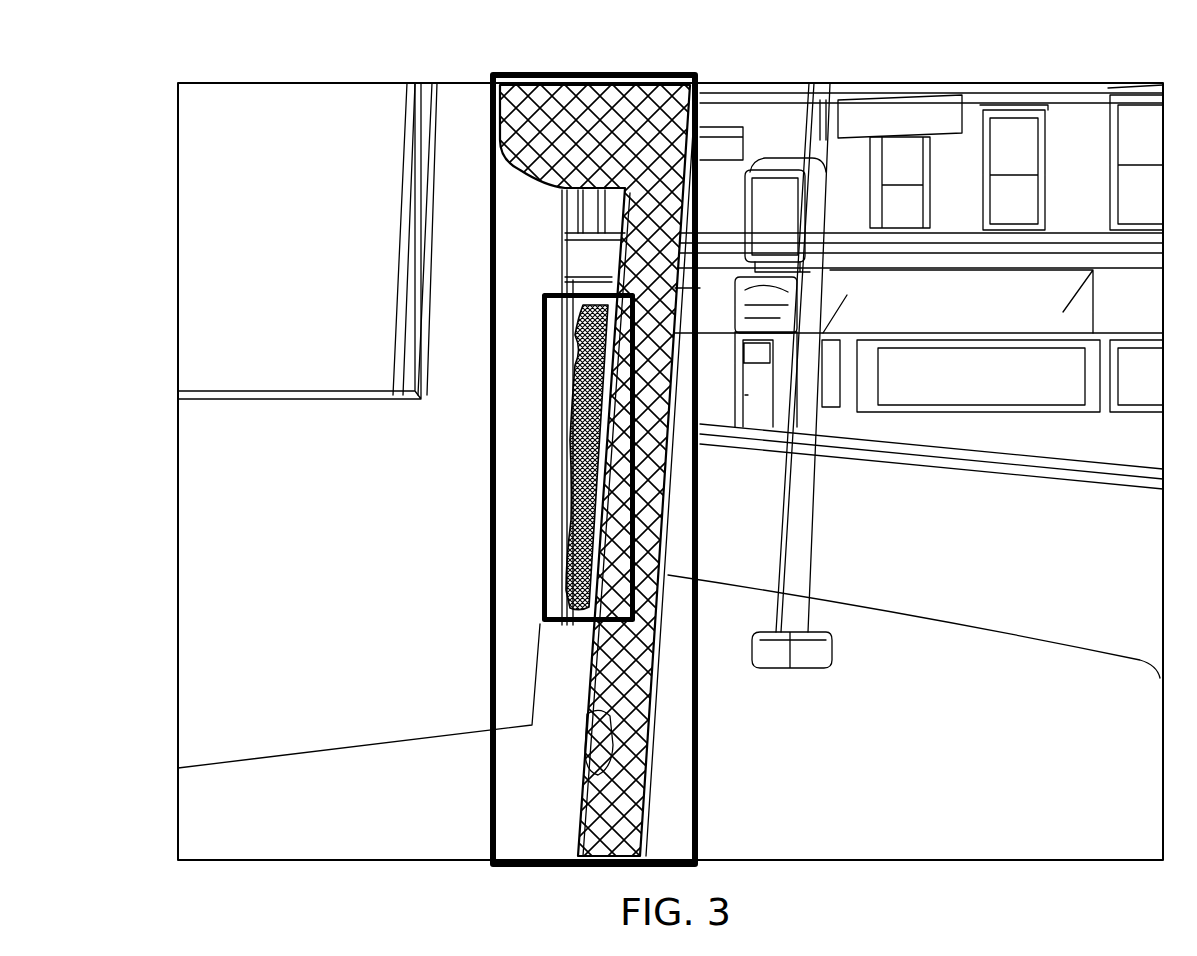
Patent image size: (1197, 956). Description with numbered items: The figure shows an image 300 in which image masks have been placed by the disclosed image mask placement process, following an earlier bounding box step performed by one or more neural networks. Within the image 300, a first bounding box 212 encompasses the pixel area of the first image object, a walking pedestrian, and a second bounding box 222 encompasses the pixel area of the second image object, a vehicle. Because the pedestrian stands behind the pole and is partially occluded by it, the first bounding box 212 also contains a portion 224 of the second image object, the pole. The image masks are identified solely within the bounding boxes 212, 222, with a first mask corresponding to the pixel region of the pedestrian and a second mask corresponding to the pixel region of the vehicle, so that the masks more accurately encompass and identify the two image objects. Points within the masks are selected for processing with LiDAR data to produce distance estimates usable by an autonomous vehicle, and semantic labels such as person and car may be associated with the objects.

The image 300 is at (207, 35).
The first bounding box 212 is at (490, 110).
The second bounding box 222 is at (637, 310).
The portion of the second image object 224 is at (610, 565).